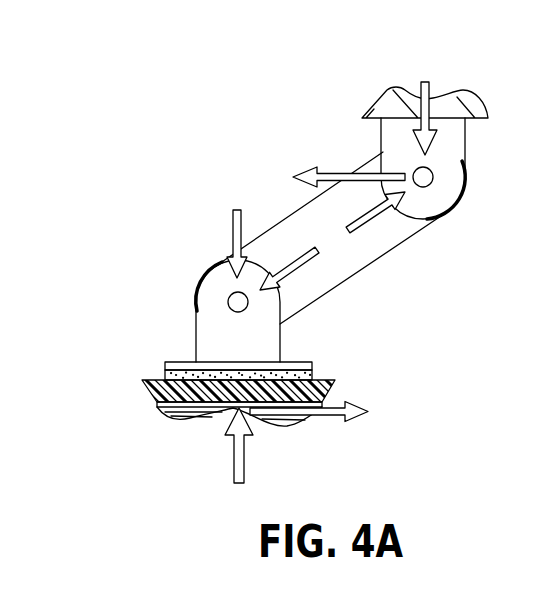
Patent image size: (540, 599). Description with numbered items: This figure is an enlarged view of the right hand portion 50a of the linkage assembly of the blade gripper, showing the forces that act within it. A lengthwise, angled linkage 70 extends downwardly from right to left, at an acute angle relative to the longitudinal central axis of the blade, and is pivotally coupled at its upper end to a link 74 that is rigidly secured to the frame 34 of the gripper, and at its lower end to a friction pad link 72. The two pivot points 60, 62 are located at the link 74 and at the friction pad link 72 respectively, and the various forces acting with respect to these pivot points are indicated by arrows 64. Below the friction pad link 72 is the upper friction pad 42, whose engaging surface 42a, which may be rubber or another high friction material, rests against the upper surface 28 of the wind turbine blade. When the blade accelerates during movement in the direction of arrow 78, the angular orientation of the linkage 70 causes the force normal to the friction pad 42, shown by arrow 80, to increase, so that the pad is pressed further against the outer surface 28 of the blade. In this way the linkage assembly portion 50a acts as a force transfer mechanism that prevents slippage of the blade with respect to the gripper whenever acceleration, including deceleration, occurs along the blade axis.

The upper surface 28 is at (330, 378).
The frame portion 34 is at (387, 103).
The upper friction pad 42 is at (178, 365).
The pad surface 42a is at (186, 383).
The right hand portion of linkage assembly 50a is at (297, 205).
The pivot point 60 is at (432, 176).
The pivot point 62 is at (238, 302).
The arrows 64 is at (425, 82).
The lengthwise linkage 70 is at (380, 256).
The friction pad link 72 is at (217, 276).
The link 74 is at (463, 139).
The arrow 78 is at (353, 405).
The arrow 80 is at (245, 467).